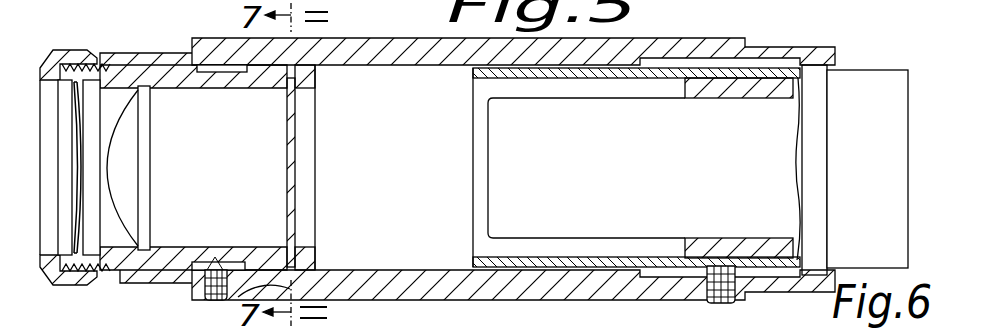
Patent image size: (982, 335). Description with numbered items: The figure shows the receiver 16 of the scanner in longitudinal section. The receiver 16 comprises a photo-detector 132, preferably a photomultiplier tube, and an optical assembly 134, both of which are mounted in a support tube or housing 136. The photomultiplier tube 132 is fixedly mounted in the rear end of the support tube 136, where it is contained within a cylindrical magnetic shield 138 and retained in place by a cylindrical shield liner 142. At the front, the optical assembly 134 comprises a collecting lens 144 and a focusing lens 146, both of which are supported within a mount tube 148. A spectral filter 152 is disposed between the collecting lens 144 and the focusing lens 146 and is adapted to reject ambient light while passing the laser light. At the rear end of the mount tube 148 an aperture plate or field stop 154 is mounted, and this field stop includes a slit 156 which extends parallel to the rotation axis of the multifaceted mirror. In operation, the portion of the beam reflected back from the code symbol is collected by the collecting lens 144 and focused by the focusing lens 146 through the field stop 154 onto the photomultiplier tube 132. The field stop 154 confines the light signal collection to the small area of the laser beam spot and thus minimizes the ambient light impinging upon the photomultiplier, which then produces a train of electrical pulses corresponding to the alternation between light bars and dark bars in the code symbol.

The receiver 16 is at (605, 31).
The photo-detector 132 is at (497, 107).
The optical assembly 134 is at (113, 63).
The support tube 136 is at (338, 37).
The cylindrical magnetic shield 138 is at (678, 72).
The cylindrical shield liner 142 is at (770, 83).
The collecting lens 144 is at (62, 97).
The focusing lens 146 is at (145, 157).
The mount tube 148 is at (250, 80).
The spectral filter 152 is at (97, 268).
The field stop 154 is at (291, 115).
The slit 156 is at (291, 167).